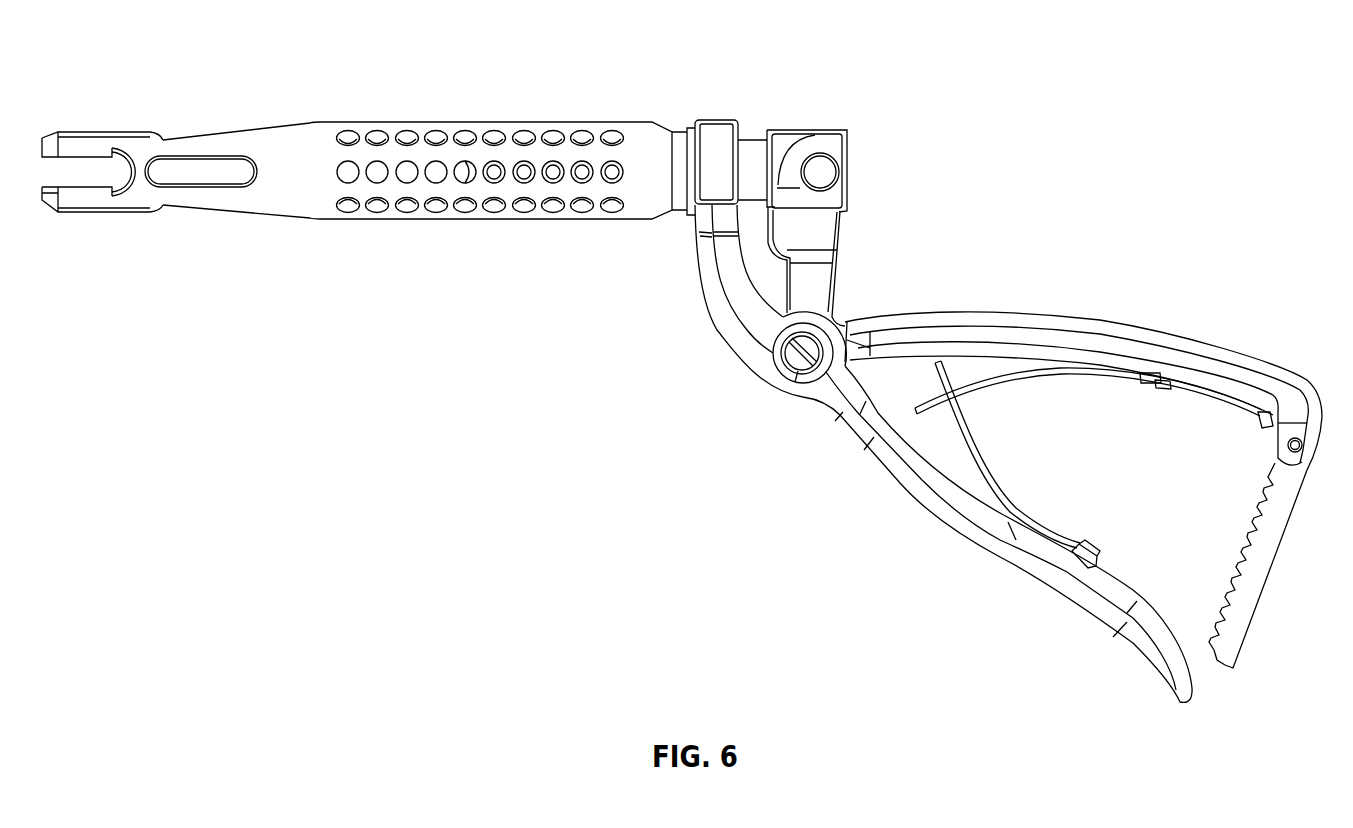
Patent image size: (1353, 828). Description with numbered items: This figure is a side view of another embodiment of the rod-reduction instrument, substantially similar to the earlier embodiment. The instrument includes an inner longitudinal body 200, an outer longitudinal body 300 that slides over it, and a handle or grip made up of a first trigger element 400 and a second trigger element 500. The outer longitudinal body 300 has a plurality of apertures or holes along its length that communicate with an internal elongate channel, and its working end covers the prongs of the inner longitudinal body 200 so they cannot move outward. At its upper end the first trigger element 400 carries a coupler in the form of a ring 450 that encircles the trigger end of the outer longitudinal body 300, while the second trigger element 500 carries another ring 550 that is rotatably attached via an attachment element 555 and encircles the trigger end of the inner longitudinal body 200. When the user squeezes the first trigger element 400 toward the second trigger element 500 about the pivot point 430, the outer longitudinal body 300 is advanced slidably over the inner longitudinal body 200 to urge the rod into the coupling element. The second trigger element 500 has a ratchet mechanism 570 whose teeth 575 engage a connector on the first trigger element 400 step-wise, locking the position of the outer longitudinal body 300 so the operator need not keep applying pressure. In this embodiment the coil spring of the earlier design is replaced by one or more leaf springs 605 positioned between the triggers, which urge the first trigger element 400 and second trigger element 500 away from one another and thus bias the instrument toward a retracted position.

The inner longitudinal body 200 is at (92, 130).
The outer longitudinal body 300 is at (272, 141).
The first trigger element 400 is at (1034, 590).
The pivot point 430 is at (792, 365).
The ring 450 is at (718, 120).
The second trigger element 500 is at (1080, 328).
The ring 550 is at (823, 130).
The attachment element 555 is at (830, 173).
The ratchet mechanism 570 is at (1241, 553).
The teeth 575 is at (1225, 585).
The leaf springs 605 is at (1030, 378).